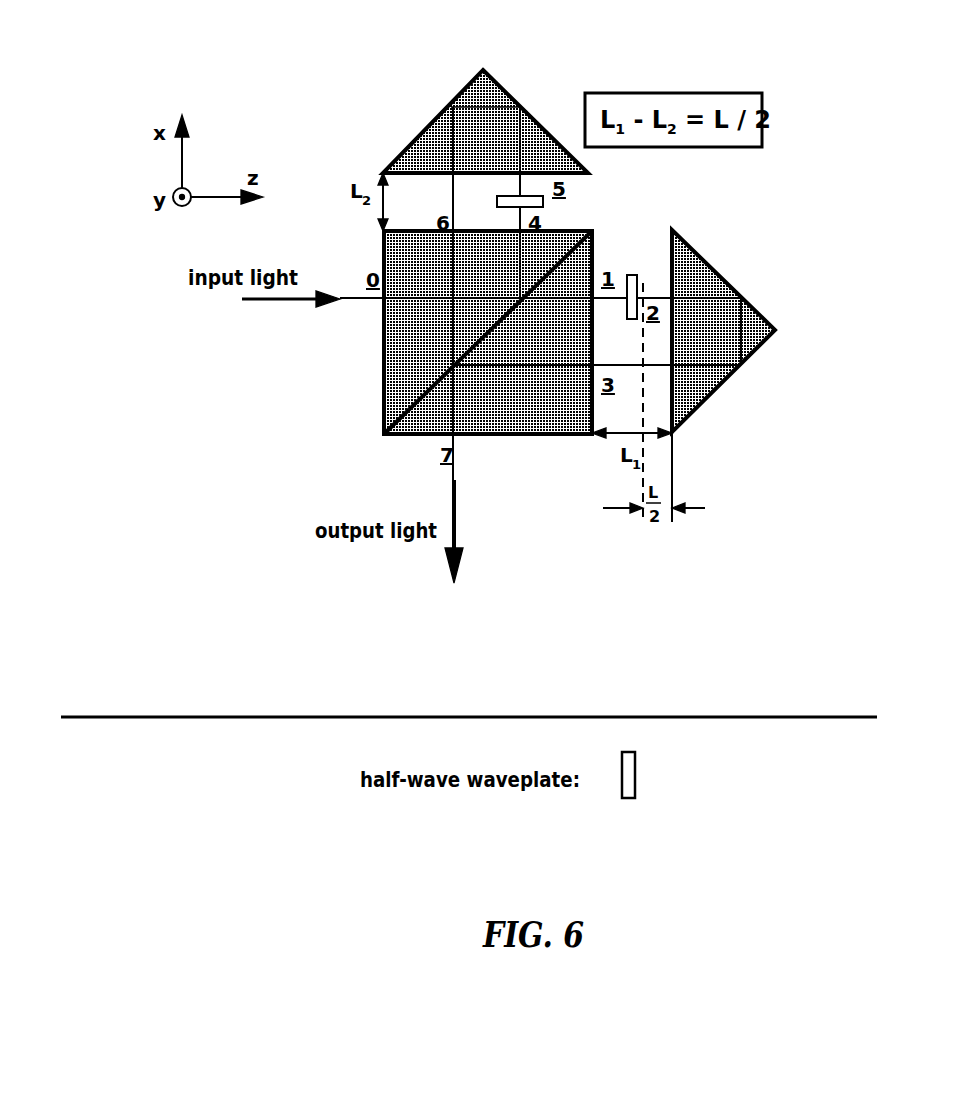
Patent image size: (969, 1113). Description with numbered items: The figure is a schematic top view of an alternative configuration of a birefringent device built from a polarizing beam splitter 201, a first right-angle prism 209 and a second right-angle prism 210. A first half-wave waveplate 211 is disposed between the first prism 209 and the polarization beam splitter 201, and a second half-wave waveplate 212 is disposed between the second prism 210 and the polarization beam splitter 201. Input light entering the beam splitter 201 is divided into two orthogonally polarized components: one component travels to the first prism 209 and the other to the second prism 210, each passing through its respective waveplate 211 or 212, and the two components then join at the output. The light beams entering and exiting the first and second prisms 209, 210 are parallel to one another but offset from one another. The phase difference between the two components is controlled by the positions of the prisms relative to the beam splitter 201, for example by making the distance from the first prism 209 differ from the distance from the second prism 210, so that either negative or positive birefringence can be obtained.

The polarizing beam splitter 201 is at (384, 378).
The first right-angle prism 209 is at (724, 388).
The second right-angle prism 210 is at (498, 84).
The first half-wave waveplate 211 is at (652, 236).
The second half-wave waveplate 212 is at (543, 201).